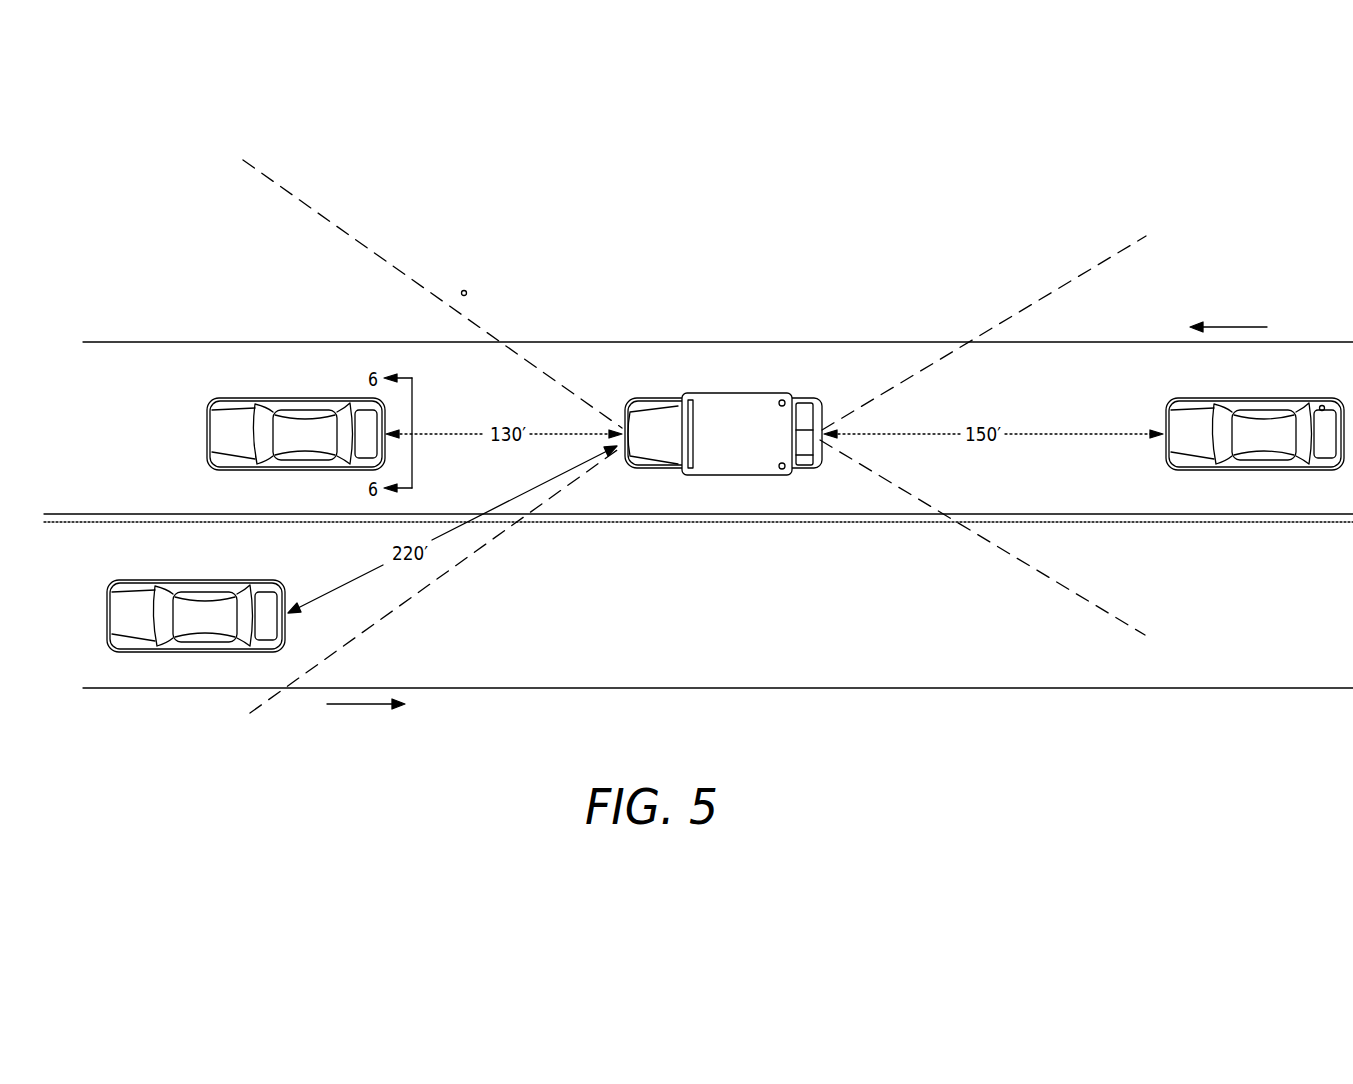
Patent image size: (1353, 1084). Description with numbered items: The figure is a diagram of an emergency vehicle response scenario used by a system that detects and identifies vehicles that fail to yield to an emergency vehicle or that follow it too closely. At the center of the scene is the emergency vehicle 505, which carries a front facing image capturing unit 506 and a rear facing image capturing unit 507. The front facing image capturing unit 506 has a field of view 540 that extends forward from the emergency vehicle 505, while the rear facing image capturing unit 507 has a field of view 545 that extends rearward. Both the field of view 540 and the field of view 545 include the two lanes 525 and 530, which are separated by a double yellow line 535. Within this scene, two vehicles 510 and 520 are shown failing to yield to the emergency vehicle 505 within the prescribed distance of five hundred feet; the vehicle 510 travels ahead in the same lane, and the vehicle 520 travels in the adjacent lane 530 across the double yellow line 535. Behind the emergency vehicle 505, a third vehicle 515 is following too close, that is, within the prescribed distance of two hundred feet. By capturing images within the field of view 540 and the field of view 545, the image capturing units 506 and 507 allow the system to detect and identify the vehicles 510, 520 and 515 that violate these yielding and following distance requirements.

The emergency vehicle 505 is at (763, 430).
The front facing image capturing unit 506 is at (630, 437).
The rear facing image capturing unit 507 is at (820, 437).
The vehicle 510 is at (225, 405).
The third vehicle 515 is at (1278, 398).
The vehicle 520 is at (198, 580).
The lane 525 is at (265, 341).
The lane 530 is at (437, 690).
The double yellow line 535 is at (143, 513).
The field of view 540 is at (421, 283).
The field of view 545 is at (1013, 310).